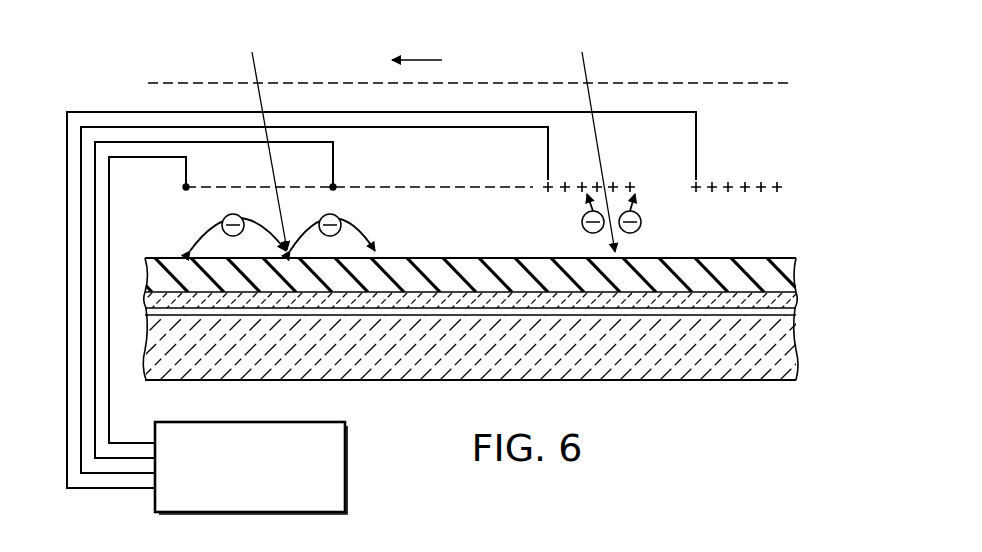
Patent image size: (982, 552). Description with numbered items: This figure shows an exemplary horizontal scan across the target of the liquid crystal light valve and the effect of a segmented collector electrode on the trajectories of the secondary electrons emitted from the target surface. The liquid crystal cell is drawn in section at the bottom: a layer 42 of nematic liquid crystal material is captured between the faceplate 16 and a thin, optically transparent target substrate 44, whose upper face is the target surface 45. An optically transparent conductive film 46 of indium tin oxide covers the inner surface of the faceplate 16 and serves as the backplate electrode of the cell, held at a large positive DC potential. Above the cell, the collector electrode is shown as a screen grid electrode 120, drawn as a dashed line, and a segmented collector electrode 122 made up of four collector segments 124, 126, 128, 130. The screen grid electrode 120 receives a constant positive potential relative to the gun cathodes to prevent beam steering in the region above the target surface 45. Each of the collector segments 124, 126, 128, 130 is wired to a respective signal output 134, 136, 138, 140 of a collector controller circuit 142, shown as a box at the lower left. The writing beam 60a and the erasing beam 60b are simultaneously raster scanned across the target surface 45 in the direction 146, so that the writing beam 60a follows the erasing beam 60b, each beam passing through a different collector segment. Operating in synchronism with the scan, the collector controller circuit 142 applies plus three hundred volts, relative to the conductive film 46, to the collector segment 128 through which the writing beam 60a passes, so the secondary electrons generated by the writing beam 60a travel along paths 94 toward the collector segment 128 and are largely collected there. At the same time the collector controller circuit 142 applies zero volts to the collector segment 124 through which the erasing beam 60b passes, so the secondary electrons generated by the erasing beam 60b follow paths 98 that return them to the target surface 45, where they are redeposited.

The faceplate 16 is at (725, 379).
The layer of nematic liquid crystal material 42 is at (797, 300).
The target substrate 44 is at (782, 257).
The target surface 45 is at (725, 257).
The conductive film 46 is at (797, 313).
The writing electron beam 60a is at (591, 78).
The erasing electron beam 60b is at (259, 74).
The secondary electron paths 94 is at (598, 233).
The secondary electron paths 98 is at (277, 223).
The screen grid electrode 120 is at (782, 82).
The segmented collector electrode 122 is at (746, 173).
The collector segment 124 is at (216, 190).
The collector segment 126 is at (483, 190).
The collector segment 128 is at (560, 190).
The collector segment 130 is at (715, 190).
The signal output 134 is at (122, 442).
The signal output 136 is at (120, 458).
The signal output 138 is at (107, 477).
The signal output 140 is at (140, 490).
The collector controller circuit 142 is at (267, 420).
The scan direction 146 is at (422, 53).